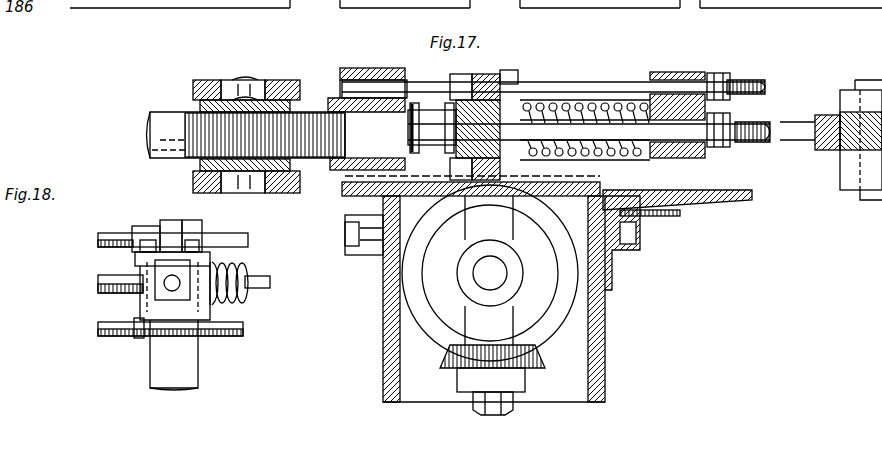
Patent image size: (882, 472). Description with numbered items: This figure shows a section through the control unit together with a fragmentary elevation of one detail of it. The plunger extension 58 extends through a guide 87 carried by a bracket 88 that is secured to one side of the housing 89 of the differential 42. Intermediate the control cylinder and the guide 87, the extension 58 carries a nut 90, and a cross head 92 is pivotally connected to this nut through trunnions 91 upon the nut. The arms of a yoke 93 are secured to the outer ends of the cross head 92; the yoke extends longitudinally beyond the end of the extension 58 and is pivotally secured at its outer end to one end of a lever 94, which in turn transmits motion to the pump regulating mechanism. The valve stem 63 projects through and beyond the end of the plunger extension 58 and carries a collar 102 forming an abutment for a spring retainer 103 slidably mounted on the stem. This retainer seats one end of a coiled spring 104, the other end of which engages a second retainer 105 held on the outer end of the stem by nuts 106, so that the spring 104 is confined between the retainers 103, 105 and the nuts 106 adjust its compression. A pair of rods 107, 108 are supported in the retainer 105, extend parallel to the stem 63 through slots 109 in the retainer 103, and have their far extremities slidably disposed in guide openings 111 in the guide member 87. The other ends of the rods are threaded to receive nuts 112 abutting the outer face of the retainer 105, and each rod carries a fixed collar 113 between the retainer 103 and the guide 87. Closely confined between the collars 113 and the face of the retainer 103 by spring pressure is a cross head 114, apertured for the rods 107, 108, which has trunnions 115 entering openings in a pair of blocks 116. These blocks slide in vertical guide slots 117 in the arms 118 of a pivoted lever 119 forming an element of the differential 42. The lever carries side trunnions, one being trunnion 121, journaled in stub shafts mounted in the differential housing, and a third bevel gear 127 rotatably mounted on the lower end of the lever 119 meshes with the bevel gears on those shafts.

In FIG. 17, the differential 42 is at (612, 292).
In FIG. 17, the plunger extension 58 is at (180, 112).
In FIG. 17, the valve stem 63 is at (428, 125).
In FIG. 18, the valve stem 63 is at (125, 278).
In FIG. 17, the guide 87 is at (348, 72).
In FIG. 17, the bracket 88 is at (368, 215).
In FIG. 17, the housing 89 is at (383, 300).
In FIG. 17, the nut 90 is at (272, 80).
In FIG. 17, the trunnions 91 is at (245, 80).
In FIG. 17, the cross head 92 is at (200, 80).
In FIG. 17, the yoke 93 is at (810, 152).
In FIG. 17, the lever 94 is at (848, 90).
In FIG. 17, the collar 102 is at (560, 100).
In FIG. 17, the spring retainer 103 is at (580, 100).
In FIG. 17, the coiled spring 104 is at (600, 112).
In FIG. 18, the coiled spring 104 is at (268, 282).
In FIG. 17, the second retainer 105 is at (700, 57).
In FIG. 17, the nuts 106 is at (738, 118).
In FIG. 17, the rod 107 is at (735, 82).
In FIG. 18, the rod 107 is at (105, 233).
In FIG. 17, the rod 108 is at (762, 200).
In FIG. 18, the rod 108 is at (110, 322).
In FIG. 17, the slots 109 is at (515, 74).
In FIG. 18, the slots 109 is at (192, 220).
In FIG. 17, the guide openings 111 is at (340, 90).
In FIG. 17, the nuts 112 is at (720, 73).
In FIG. 17, the collar 113 is at (455, 78).
In FIG. 18, the collar 113 is at (140, 226).
In FIG. 17, the cross head 114 is at (488, 74).
In FIG. 18, the cross head 114 is at (168, 220).
In FIG. 18, the trunnions 115 is at (176, 280).
In FIG. 18, the blocks 116 is at (225, 268).
In FIG. 18, the guide slots 117 is at (240, 305).
In FIG. 18, the arms 118 is at (185, 358).
In FIG. 17, the pivoted lever 119 is at (490, 273).
In FIG. 17, the trunnion 121 is at (488, 270).
In FIG. 17, the third bevel gear 127 is at (548, 368).